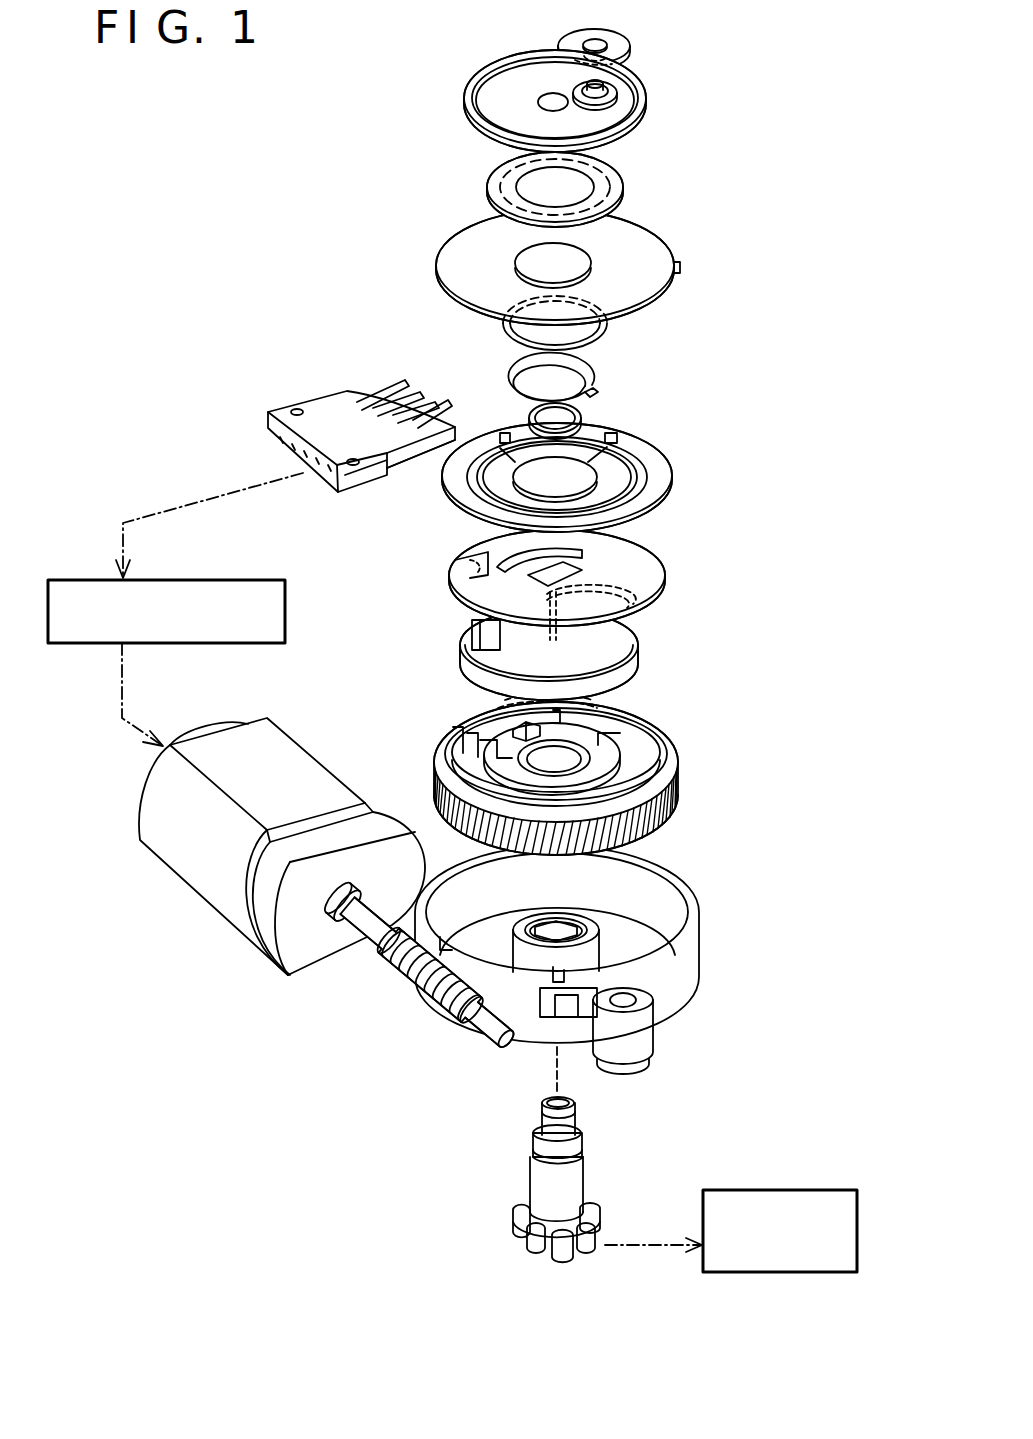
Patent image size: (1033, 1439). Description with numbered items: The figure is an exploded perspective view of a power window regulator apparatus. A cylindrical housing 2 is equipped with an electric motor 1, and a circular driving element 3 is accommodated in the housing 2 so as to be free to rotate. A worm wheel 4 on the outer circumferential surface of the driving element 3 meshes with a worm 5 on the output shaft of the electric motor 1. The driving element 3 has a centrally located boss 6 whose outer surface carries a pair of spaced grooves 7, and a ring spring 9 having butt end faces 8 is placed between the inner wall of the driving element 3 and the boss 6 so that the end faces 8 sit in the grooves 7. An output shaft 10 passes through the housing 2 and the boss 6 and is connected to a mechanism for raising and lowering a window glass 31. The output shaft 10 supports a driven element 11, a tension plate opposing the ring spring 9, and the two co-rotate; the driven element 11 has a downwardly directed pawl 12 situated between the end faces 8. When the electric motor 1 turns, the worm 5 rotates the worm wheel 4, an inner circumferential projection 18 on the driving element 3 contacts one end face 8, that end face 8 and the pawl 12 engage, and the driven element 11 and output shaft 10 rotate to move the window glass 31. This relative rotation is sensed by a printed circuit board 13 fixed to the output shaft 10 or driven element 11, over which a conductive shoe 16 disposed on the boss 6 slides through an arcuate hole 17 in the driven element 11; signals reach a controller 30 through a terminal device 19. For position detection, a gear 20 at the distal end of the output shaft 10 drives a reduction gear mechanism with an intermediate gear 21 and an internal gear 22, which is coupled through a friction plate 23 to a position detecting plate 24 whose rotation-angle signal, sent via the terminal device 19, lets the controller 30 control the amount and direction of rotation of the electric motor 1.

The electric motor 1 is at (290, 763).
The cylindrical housing 2 is at (700, 953).
The driving element 3 is at (575, 774).
The worm wheel 4 is at (675, 812).
The worm 5 is at (430, 1000).
The boss 6 is at (613, 780).
The grooves 7 is at (453, 745).
The butt end faces 8 is at (503, 642).
The ring spring 9 is at (589, 654).
The output shaft 10 is at (575, 1185).
The driven element 11 is at (590, 576).
The pawl 12 is at (472, 560).
The printed circuit board 13 is at (640, 440).
The shoe 16 is at (535, 730).
The arcuate hole 17 is at (575, 553).
The inner circumferential projection 18 is at (455, 748).
The terminal device 19 is at (320, 405).
The gear 20 is at (580, 1108).
The intermediate gear 21 is at (620, 47).
The internal gear 22 is at (487, 127).
The friction plate 23 is at (623, 192).
The position detecting plate 24 is at (438, 263).
The controller 30 is at (214, 578).
The window glass 31 is at (823, 1190).